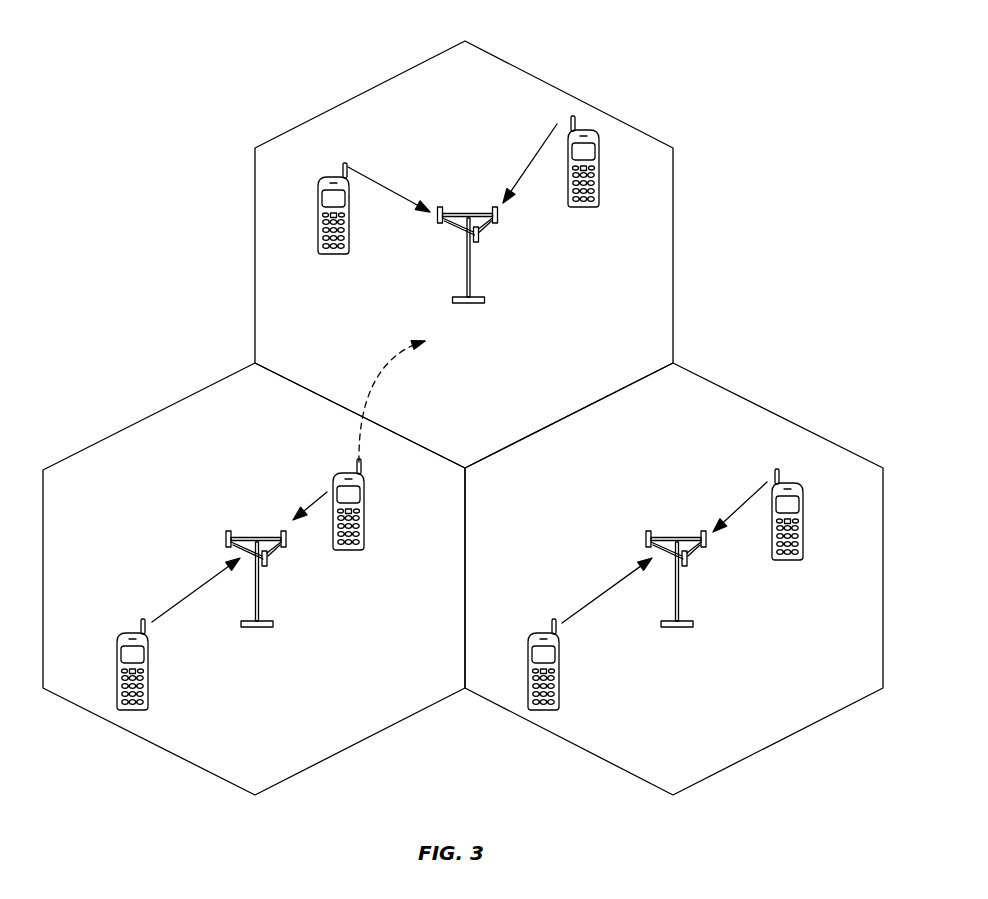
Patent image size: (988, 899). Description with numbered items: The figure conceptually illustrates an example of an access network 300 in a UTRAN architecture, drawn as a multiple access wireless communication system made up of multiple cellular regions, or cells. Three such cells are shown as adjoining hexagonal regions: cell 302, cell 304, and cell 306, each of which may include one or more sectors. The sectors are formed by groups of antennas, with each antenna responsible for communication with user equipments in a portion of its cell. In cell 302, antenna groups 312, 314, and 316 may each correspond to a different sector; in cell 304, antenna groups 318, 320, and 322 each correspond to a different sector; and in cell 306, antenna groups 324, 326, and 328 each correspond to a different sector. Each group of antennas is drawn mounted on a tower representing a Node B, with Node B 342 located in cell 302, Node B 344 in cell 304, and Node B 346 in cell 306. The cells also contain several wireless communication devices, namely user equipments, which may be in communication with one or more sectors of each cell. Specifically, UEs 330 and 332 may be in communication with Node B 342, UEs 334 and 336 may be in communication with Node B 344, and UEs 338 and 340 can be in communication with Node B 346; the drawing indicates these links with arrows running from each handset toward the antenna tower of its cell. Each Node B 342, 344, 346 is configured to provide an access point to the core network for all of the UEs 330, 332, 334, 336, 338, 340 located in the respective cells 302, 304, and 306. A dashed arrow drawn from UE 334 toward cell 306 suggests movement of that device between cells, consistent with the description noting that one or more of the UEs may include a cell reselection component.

The access network 300 is at (799, 66).
The cell 302 is at (778, 413).
The cell 304 is at (123, 430).
The cell 306 is at (553, 85).
The antenna group 312 is at (644, 535).
The antenna group 314 is at (688, 567).
The antenna group 316 is at (705, 548).
The antenna group 318 is at (268, 567).
The antenna group 320 is at (286, 548).
The antenna group 322 is at (224, 535).
The antenna group 324 is at (435, 224).
The antenna group 326 is at (478, 243).
The antenna group 328 is at (496, 224).
The UE 330 is at (803, 508).
The UE 332 is at (530, 660).
The UE 334 is at (364, 492).
The UE 336 is at (118, 660).
The UE 338 is at (333, 254).
The UE 340 is at (590, 208).
The Node B 342 is at (675, 536).
The Node B 344 is at (255, 536).
The Node B 346 is at (469, 214).